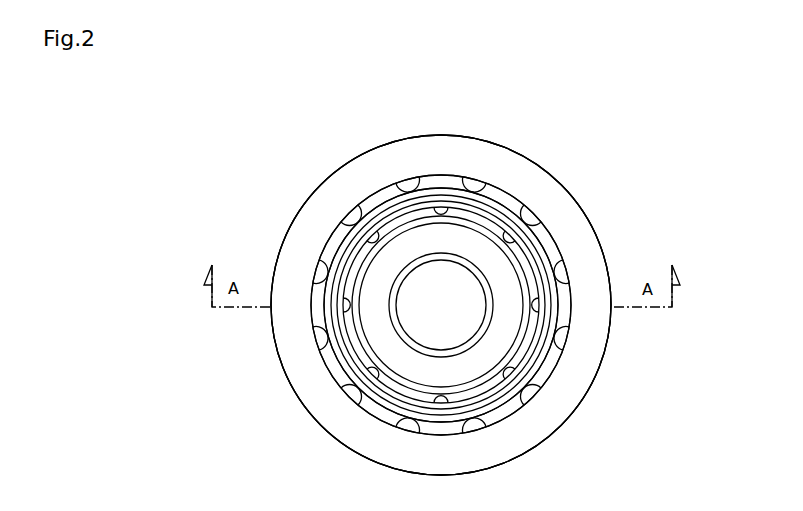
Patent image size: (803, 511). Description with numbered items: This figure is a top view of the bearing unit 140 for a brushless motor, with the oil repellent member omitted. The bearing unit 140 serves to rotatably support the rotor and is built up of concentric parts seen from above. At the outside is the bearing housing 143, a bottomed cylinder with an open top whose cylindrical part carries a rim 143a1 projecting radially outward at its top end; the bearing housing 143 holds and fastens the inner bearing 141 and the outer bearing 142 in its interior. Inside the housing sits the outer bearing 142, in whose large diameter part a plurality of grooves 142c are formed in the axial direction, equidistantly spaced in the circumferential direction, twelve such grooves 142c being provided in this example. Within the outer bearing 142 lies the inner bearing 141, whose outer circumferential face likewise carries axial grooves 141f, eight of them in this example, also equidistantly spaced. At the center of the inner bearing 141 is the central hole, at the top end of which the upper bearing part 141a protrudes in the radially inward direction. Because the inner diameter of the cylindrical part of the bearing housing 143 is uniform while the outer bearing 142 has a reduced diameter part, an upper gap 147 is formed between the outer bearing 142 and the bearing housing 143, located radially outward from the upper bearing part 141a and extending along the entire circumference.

The bearing unit 140 is at (489, 130).
The bearing housing 143 is at (512, 177).
The rim 143a1 is at (441, 305).
The upper gap 147 is at (311, 306).
The grooves 142c is at (322, 273).
The outer bearing 142 is at (536, 357).
The grooves 141f is at (543, 304).
The inner bearing 141 is at (497, 270).
The upper bearing part 141a is at (470, 279).